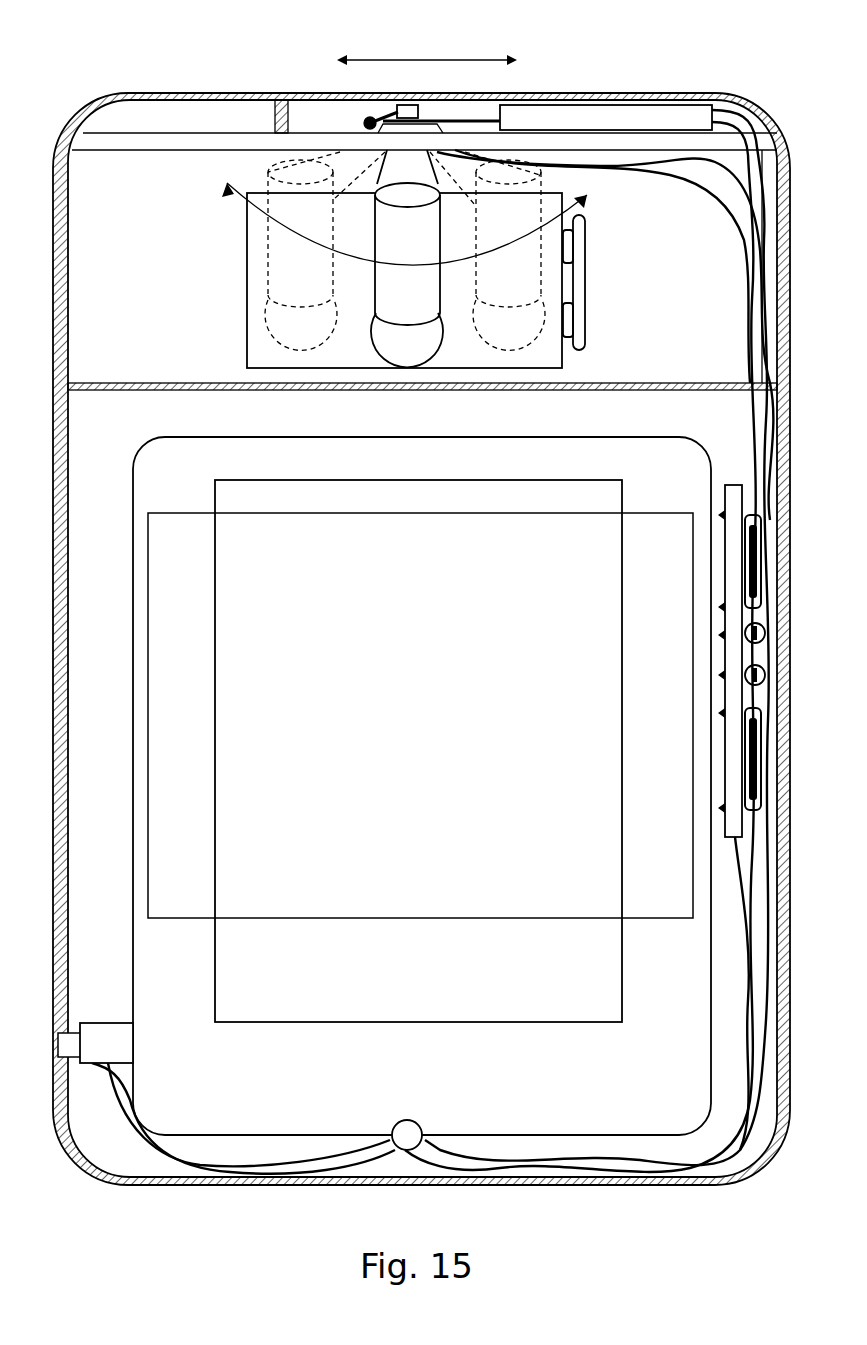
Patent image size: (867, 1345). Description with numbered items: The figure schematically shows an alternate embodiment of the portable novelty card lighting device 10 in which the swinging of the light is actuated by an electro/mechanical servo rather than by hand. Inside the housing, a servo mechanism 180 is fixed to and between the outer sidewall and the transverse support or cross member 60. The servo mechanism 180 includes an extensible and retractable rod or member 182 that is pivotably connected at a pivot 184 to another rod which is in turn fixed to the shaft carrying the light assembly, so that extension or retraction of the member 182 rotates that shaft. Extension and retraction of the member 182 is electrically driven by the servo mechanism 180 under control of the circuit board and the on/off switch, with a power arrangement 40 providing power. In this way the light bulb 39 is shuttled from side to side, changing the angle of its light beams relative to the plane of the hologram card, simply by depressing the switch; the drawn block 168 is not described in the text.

The portable novelty card lighting device 10 is at (78, 112).
The transverse support 60 is at (178, 137).
The pivot 184 is at (365, 115).
The slider block 168 is at (427, 110).
The extensible and retractable rod 182 is at (467, 115).
The servo mechanism 180 is at (645, 122).
The power arrangement 40 is at (244, 320).
The light bulb 39 is at (410, 355).